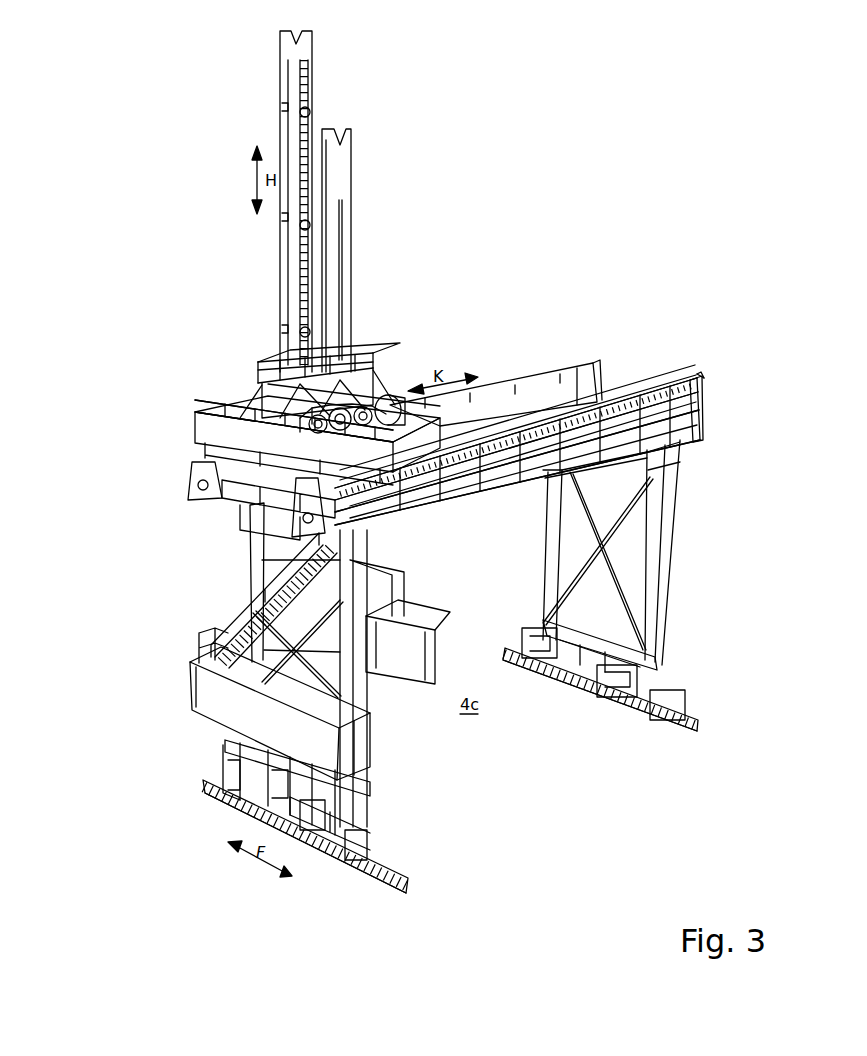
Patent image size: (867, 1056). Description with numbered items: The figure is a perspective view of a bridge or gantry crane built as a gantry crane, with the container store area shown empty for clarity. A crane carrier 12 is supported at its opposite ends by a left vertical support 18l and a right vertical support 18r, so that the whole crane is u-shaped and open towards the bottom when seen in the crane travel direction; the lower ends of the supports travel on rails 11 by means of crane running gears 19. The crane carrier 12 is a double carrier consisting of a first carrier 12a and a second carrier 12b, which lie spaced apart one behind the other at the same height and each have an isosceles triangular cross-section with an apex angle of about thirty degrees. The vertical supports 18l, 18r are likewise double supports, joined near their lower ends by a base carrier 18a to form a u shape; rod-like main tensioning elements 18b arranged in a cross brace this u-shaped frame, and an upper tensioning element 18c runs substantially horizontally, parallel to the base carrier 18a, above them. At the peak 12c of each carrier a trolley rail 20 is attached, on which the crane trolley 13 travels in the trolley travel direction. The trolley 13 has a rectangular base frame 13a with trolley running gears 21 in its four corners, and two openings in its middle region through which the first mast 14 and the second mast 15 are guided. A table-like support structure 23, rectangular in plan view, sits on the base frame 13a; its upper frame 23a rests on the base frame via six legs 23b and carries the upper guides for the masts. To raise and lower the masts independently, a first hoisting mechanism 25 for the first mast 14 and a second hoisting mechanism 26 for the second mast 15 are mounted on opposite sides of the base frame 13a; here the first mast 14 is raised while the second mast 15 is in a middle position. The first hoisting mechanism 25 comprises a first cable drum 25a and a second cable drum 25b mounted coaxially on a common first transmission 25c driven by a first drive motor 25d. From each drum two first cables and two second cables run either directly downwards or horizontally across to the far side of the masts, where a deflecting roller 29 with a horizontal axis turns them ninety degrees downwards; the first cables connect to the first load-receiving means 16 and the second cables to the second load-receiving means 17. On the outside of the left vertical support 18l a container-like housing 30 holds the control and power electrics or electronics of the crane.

The rails 11 is at (700, 716).
The crane carrier 12 is at (519, 394).
The first carrier 12a is at (548, 355).
The second carrier 12b is at (692, 432).
The peak 12c is at (240, 443).
The crane trolley 13 is at (210, 405).
The base frame 13a is at (240, 420).
The first mast 14 is at (291, 90).
The second mast 15 is at (346, 150).
The first load-receiving means 16 is at (272, 512).
The second load-receiving means 17 is at (397, 605).
The base carrier 18a is at (622, 658).
The main tensioning elements 18b is at (605, 577).
The upper tensioning element 18c is at (653, 457).
The left vertical support 18l is at (245, 583).
The right vertical support 18r is at (684, 552).
The crane running gears 19 is at (643, 710).
The trolley rail 20 is at (690, 402).
The trolley running gears 21 is at (447, 415).
The support structure 23 is at (377, 375).
The upper frame 23a is at (373, 355).
The legs 23b is at (373, 392).
The first hoisting mechanism 25 is at (240, 438).
The first cable drum 25a is at (352, 428).
The second cable drum 25b is at (395, 470).
The first transmission 25c is at (370, 448).
The first drive motor 25d is at (250, 460).
The second hoisting mechanism 26 is at (345, 352).
The deflecting roller 29 is at (255, 413).
The container-like housing 30 is at (205, 690).